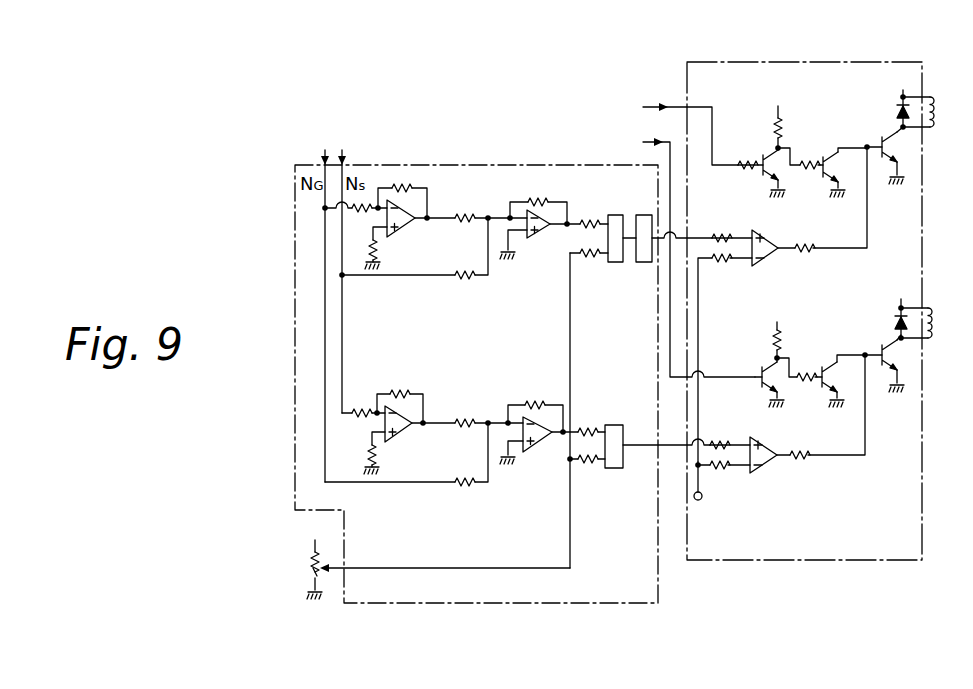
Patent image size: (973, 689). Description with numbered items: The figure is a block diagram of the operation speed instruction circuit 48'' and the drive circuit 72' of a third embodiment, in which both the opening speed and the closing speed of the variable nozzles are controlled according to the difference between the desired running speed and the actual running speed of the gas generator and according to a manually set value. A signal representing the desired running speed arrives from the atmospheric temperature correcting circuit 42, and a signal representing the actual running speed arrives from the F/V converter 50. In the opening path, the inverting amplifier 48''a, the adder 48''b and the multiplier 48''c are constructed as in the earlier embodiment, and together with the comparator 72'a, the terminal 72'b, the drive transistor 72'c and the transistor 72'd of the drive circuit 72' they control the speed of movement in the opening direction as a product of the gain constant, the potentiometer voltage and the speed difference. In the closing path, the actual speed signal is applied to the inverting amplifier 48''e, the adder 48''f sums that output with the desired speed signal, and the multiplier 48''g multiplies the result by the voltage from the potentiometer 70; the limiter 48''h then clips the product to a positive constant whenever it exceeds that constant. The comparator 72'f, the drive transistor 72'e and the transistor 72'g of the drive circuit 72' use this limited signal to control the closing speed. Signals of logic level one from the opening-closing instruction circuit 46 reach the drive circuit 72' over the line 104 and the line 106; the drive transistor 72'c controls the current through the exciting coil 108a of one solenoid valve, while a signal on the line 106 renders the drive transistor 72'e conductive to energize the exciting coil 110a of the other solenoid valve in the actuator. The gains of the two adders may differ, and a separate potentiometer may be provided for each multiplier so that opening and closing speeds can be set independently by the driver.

The atmospheric temperature correcting circuit 42 is at (342, 152).
The F/V converter 50 is at (325, 152).
The opening-closing instruction circuit 46 is at (484, 113).
The operation speed instruction circuit 48'' is at (507, 410).
The inverting amplifier 48''a is at (408, 438).
The adder 48''b is at (546, 454).
The multiplier 48''c is at (638, 424).
The inverting amplifier 48''e is at (406, 231).
The adder 48''f is at (548, 246).
The multiplier 48''g is at (605, 219).
The limiter 48''h is at (651, 263).
The potentiometer 70 is at (310, 568).
The drive circuit 72' is at (818, 287).
The comparator 72'a is at (780, 434).
The terminal 72'b is at (721, 506).
The drive transistor 72'c is at (857, 349).
The transistor 72'd is at (810, 373).
The drive transistor 72'e is at (888, 177).
The comparator 72'f is at (782, 304).
The transistor 72'g is at (802, 156).
The line 104 is at (648, 142).
The line 106 is at (648, 107).
The exciting coil 108a is at (932, 306).
The exciting coil 110a is at (933, 94).